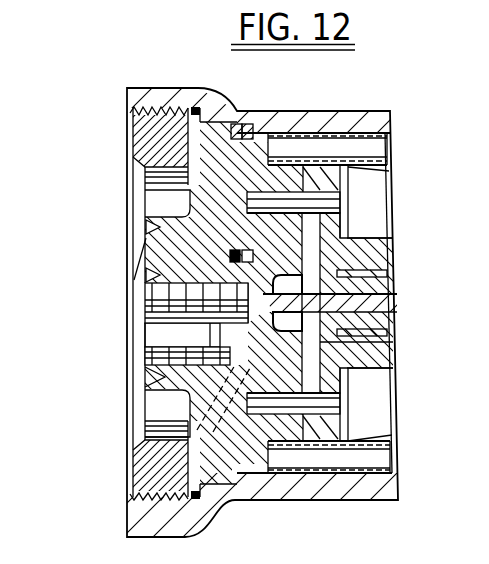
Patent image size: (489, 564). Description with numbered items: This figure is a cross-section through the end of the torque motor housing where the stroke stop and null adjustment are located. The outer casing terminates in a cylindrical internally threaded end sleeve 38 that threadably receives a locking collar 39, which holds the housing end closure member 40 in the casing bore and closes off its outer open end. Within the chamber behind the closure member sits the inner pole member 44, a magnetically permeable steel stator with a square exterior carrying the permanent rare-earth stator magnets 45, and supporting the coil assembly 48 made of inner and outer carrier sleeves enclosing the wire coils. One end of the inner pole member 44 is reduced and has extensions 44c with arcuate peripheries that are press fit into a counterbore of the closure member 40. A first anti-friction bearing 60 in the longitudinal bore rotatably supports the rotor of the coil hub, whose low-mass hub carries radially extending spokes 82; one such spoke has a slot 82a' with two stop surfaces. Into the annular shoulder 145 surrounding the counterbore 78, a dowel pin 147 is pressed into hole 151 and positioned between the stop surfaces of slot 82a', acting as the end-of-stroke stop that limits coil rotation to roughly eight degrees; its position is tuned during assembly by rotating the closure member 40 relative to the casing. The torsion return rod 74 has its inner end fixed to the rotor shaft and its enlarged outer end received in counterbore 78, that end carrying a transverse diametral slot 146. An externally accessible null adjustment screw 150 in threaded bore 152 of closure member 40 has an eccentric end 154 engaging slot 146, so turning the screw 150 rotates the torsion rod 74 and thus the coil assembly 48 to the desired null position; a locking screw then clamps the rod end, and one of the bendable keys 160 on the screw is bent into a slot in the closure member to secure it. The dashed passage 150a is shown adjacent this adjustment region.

The internally threaded end sleeve 38 is at (152, 93).
The locking collar 39 is at (133, 122).
The housing end closure member 40 is at (200, 185).
The hole 151 is at (222, 130).
The dowel pin 147 is at (285, 188).
The slot 82a' is at (319, 133).
The coil assembly 48 is at (394, 128).
The permanent rare-earth stator magnets 45 is at (378, 192).
The annular shoulder 145 is at (348, 238).
The first anti-friction bearing 60 is at (365, 270).
The torsion return rod 74 is at (387, 305).
The inner pole member 44 is at (387, 350).
The spoke 82 is at (327, 426).
The extensions 44c is at (293, 352).
The hidden passage 150a is at (192, 388).
The transverse diametral slot 146 is at (165, 458).
The threaded bore 152 is at (147, 377).
The null adjustment screw 150 is at (148, 346).
The eccentric end 154 is at (147, 298).
The bendable keys 160 is at (147, 252).
The counterbore 78 is at (165, 232).